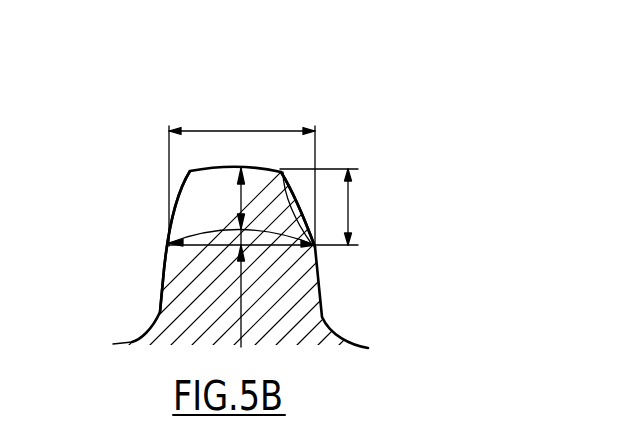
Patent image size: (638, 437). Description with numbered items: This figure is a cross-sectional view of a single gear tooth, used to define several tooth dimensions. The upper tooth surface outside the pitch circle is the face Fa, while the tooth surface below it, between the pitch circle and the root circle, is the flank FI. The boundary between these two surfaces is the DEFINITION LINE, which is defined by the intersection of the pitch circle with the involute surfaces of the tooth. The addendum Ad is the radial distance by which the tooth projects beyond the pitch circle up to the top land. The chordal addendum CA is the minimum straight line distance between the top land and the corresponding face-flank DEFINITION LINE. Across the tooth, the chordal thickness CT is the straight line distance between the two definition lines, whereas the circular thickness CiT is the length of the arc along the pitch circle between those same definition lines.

The chordal thickness CT is at (235, 131).
The circular thickness CiT is at (281, 170).
The chordal addendum CA is at (350, 212).
The face Fa is at (192, 186).
The addendum Ad is at (240, 200).
The flank FI is at (160, 278).
The face-flank definition line DEFINITION LINE is at (316, 247).